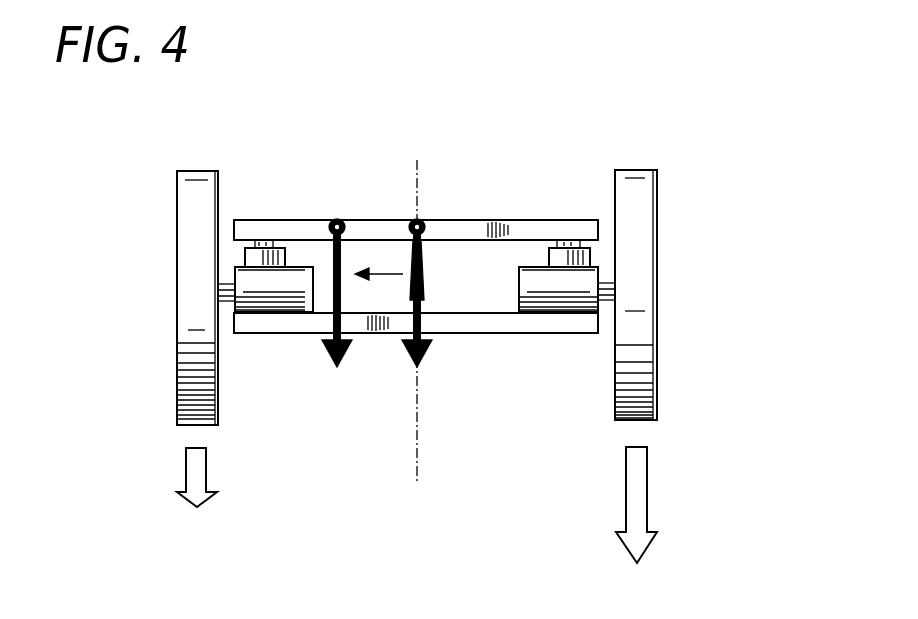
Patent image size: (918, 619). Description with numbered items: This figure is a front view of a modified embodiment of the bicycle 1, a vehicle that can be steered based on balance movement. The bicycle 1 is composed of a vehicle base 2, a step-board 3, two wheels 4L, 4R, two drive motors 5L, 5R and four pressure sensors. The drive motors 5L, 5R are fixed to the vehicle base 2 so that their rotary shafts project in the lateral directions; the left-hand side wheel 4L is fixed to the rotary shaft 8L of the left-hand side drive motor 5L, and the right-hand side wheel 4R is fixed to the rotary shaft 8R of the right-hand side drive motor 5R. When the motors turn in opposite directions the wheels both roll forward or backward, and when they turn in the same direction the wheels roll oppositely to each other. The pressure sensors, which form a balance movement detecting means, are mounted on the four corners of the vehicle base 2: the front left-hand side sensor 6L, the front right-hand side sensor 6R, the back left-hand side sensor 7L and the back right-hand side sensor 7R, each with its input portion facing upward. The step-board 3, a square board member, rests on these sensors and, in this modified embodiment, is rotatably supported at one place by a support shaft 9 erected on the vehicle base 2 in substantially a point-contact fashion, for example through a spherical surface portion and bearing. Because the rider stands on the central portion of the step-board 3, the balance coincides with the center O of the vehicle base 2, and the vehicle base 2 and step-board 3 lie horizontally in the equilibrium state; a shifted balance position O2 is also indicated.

The bicycle 1 is at (549, 192).
The vehicle base 2 is at (503, 320).
The step-board 3 is at (475, 228).
The right-hand side wheel 4R is at (185, 368).
The left-hand side wheel 4L is at (643, 372).
The right-hand side drive motor 5R is at (268, 298).
The left-hand side drive motor 5L is at (563, 298).
The front right-hand side sensor 6R is at (174, 259).
The back right-hand side sensor 7R is at (253, 258).
The front left-hand side sensor 6L is at (654, 252).
The back left-hand side sensor 7L is at (587, 257).
The rotary shaft 8R is at (223, 293).
The rotary shaft 8L is at (598, 294).
The support shaft 9 is at (427, 297).
The center of the vehicle base O is at (414, 220).
The shifted center of gravity position O2 is at (337, 222).